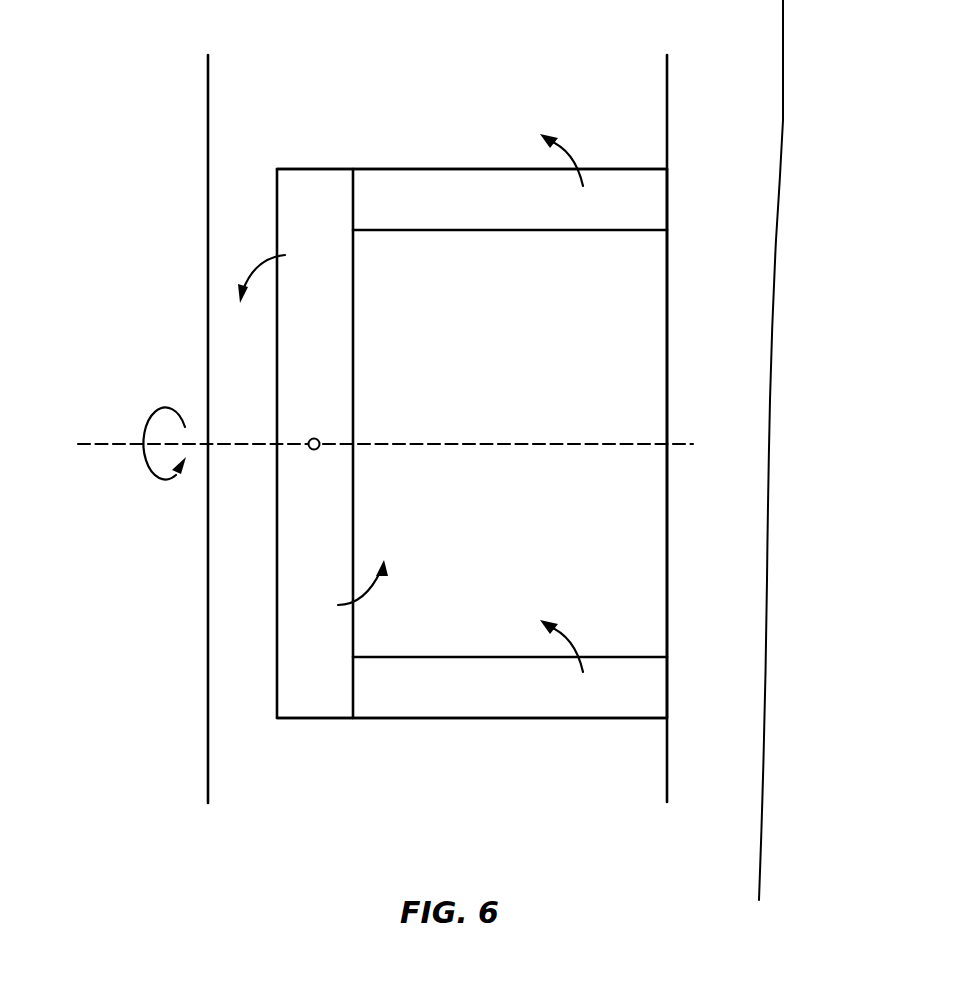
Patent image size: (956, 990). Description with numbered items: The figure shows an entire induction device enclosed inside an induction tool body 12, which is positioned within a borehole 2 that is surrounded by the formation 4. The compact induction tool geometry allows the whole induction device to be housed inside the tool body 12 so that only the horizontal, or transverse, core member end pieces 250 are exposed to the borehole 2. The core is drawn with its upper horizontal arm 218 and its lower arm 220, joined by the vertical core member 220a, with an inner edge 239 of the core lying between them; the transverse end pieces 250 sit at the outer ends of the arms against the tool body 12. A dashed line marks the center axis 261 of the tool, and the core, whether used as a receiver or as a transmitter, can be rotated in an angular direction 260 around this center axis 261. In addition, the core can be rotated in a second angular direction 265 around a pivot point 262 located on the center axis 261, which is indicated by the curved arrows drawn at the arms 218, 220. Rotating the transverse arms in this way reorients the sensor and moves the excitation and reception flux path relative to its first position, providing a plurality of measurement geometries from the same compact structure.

The borehole 2 is at (755, 392).
The formation 4 is at (848, 281).
The induction tool body 12 is at (206, 606).
The horizontal core arm 218 is at (428, 182).
The lower end of sleeve 220 is at (425, 705).
The sleeve body 220a is at (552, 544).
The shoulder / inner edge 239 is at (343, 528).
The horizontal core member end pieces 250 is at (651, 202).
The angular direction 260 is at (166, 405).
The center axis 261 is at (457, 442).
The point 262 is at (316, 437).
The angular direction 265 is at (250, 267).